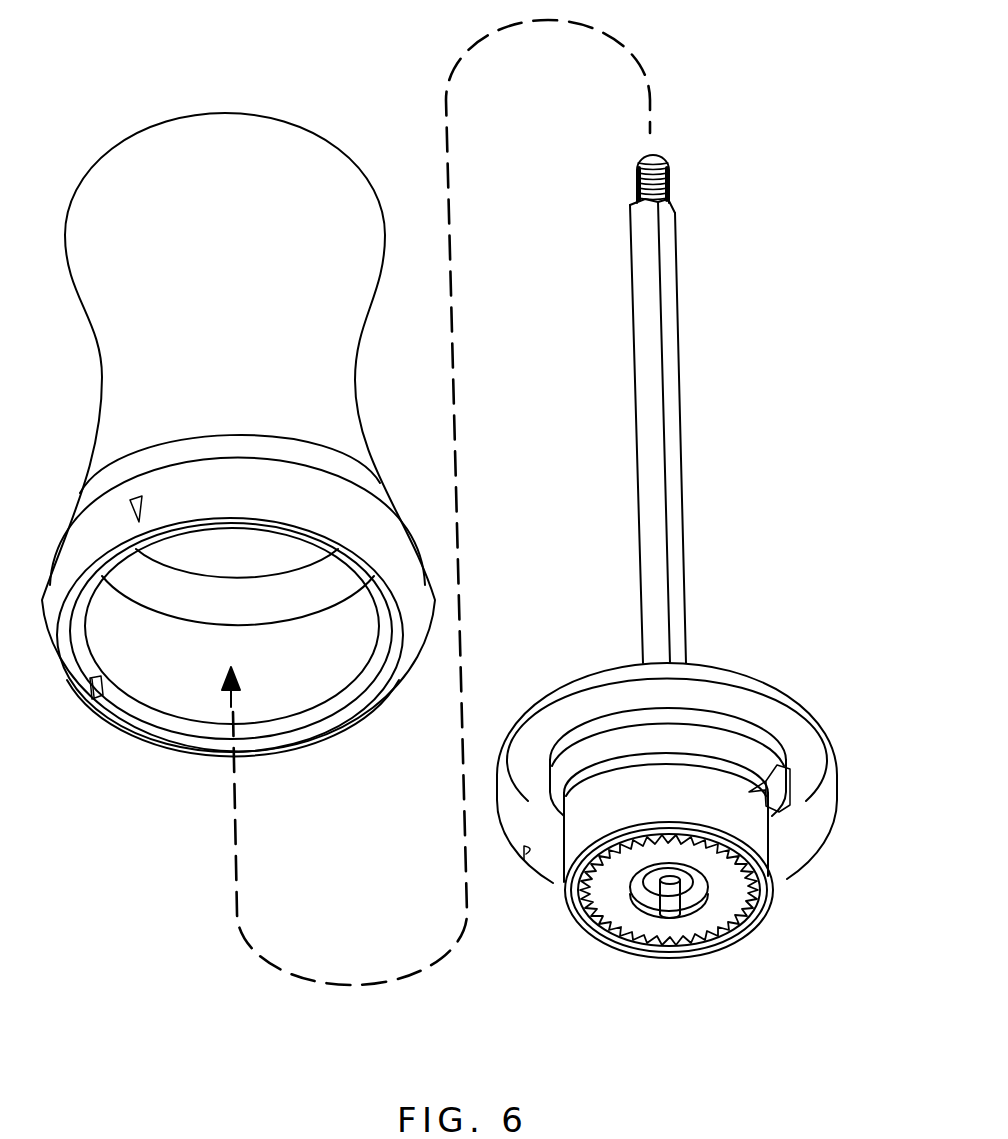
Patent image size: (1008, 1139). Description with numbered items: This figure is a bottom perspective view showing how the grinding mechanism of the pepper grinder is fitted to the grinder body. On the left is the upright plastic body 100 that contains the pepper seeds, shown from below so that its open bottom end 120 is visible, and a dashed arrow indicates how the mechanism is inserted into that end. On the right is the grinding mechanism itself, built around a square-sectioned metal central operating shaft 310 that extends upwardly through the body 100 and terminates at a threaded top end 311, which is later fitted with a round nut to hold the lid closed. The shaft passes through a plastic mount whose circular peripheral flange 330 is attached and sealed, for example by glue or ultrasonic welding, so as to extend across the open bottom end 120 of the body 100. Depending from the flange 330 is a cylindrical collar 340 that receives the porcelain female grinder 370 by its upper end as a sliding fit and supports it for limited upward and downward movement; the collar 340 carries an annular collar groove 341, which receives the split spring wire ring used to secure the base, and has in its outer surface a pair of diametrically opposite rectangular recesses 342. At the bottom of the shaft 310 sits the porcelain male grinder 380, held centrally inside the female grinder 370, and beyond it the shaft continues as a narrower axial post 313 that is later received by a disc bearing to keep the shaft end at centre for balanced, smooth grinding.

The body 100 is at (337, 338).
The open bottom end 120 is at (151, 716).
The central operating shaft 310 is at (673, 390).
The top end 311 is at (668, 181).
The post 313 is at (670, 917).
The peripheral flange 330 is at (753, 682).
The collar 340 is at (707, 760).
The collar groove 341 is at (743, 742).
The rectangular recesses 342 is at (770, 793).
The female grinder 370 is at (702, 923).
The male grinder 380 is at (590, 937).